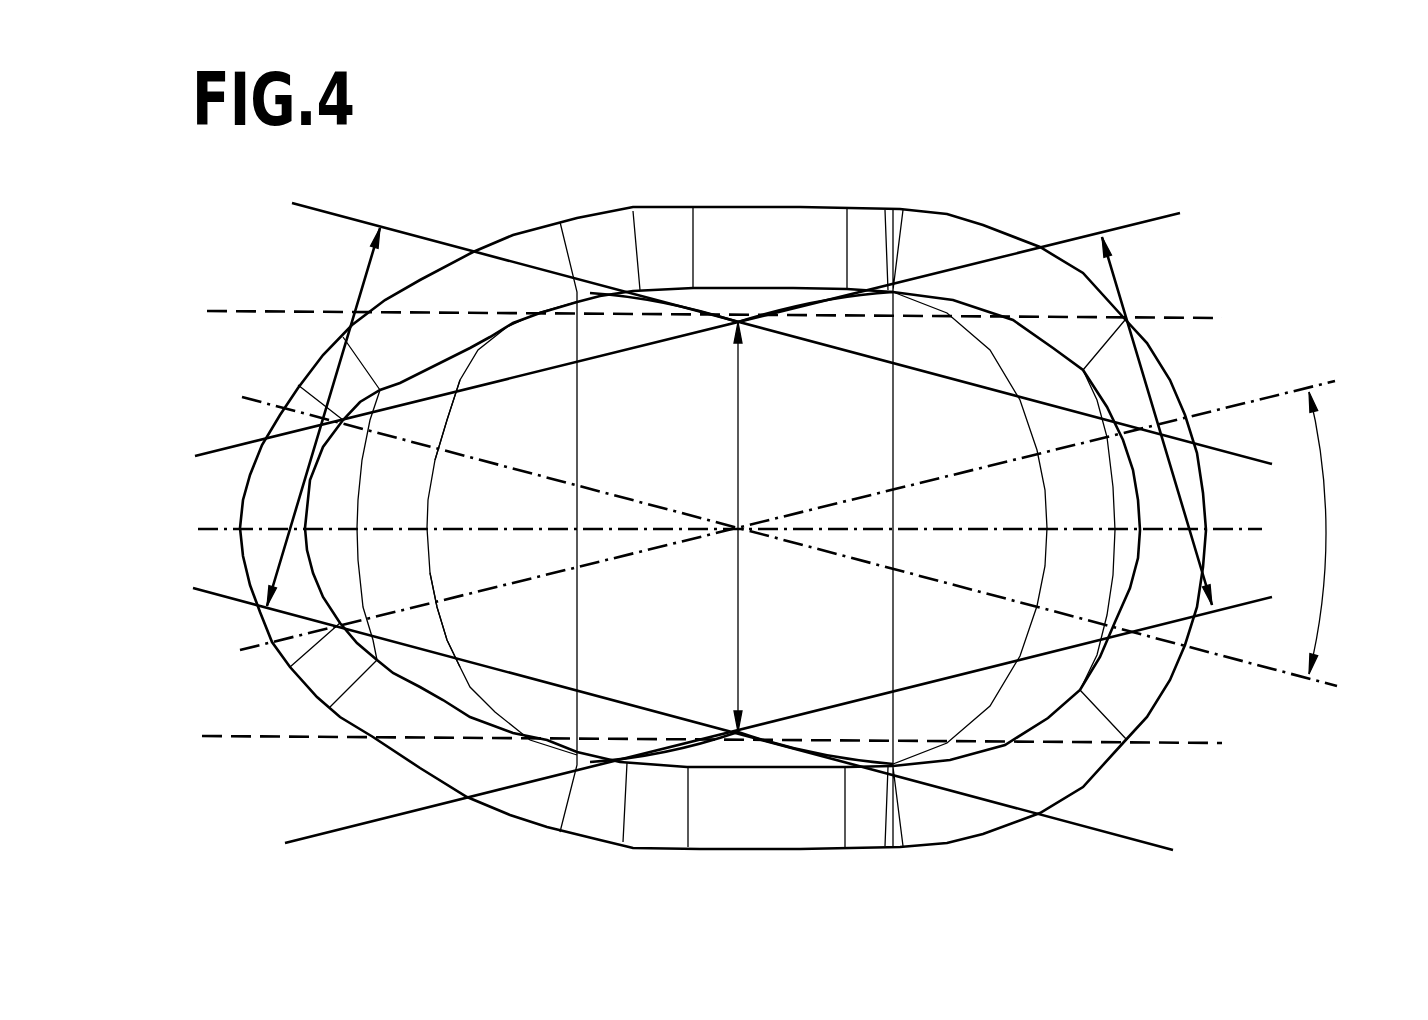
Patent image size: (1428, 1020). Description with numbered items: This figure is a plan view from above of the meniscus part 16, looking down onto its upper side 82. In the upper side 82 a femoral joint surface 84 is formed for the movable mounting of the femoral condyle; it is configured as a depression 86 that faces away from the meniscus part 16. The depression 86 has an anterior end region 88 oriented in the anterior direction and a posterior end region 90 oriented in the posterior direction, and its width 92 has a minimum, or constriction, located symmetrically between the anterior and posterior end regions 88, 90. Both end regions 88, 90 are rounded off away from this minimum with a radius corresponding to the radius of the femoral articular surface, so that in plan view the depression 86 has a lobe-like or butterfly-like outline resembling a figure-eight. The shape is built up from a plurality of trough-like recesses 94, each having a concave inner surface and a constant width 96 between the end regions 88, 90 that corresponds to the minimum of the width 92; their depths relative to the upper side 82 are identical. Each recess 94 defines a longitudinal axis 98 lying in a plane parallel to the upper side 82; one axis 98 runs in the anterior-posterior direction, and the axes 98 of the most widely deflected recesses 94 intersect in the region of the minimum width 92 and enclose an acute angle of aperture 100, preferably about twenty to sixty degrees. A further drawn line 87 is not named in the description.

The meniscus part 16 is at (941, 202).
The upper side 82 is at (357, 573).
The femoral joint surface 84 is at (648, 430).
The depression 86 is at (543, 430).
The boundary line 87 is at (473, 368).
The anterior end region 88 is at (440, 630).
The posterior end region 90 is at (1222, 530).
The width 92 is at (740, 428).
The trough-like recesses 94 is at (1140, 222).
The constant width 96 is at (332, 380).
The longitudinal axis 98 is at (198, 528).
The angle of aperture 100 is at (1327, 530).